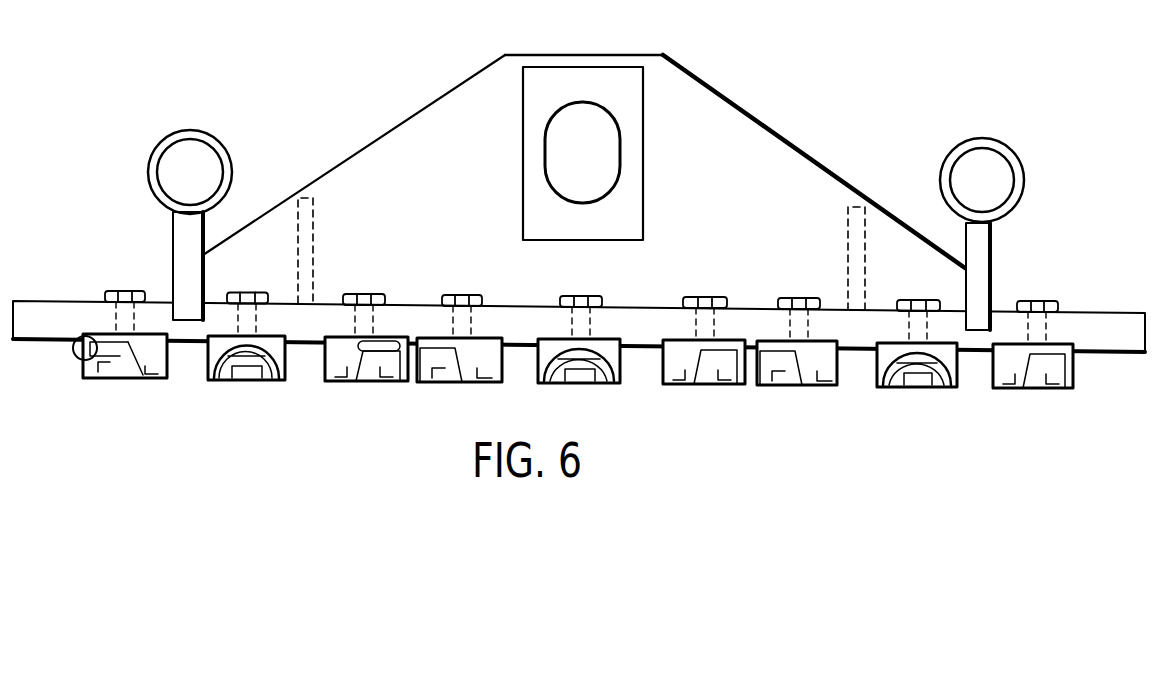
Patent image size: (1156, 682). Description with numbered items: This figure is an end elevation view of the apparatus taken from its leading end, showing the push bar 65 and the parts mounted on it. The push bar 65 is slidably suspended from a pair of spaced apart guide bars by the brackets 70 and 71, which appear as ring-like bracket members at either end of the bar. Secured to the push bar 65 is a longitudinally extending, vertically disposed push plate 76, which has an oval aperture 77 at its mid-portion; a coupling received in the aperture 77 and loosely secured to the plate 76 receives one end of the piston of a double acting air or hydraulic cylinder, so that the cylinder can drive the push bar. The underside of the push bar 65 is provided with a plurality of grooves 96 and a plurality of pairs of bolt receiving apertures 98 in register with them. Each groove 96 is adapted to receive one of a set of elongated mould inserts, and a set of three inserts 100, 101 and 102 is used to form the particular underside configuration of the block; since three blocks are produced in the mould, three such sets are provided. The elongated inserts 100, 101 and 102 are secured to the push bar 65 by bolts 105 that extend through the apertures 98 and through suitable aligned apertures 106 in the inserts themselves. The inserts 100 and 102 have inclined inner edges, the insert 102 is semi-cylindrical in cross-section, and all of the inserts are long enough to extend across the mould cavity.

The push bar 65 is at (644, 318).
The bracket 70 is at (227, 137).
The bracket 71 is at (952, 150).
The push plate 76 is at (834, 189).
The oval aperture 77 is at (606, 176).
The groove 96 is at (79, 338).
The bolt receiving aperture 98 is at (118, 312).
The mould insert 100 is at (117, 378).
The mould insert 101 is at (238, 380).
The mould insert 102 is at (370, 382).
The bolt 105 is at (346, 296).
The aligned aperture 106 is at (403, 322).